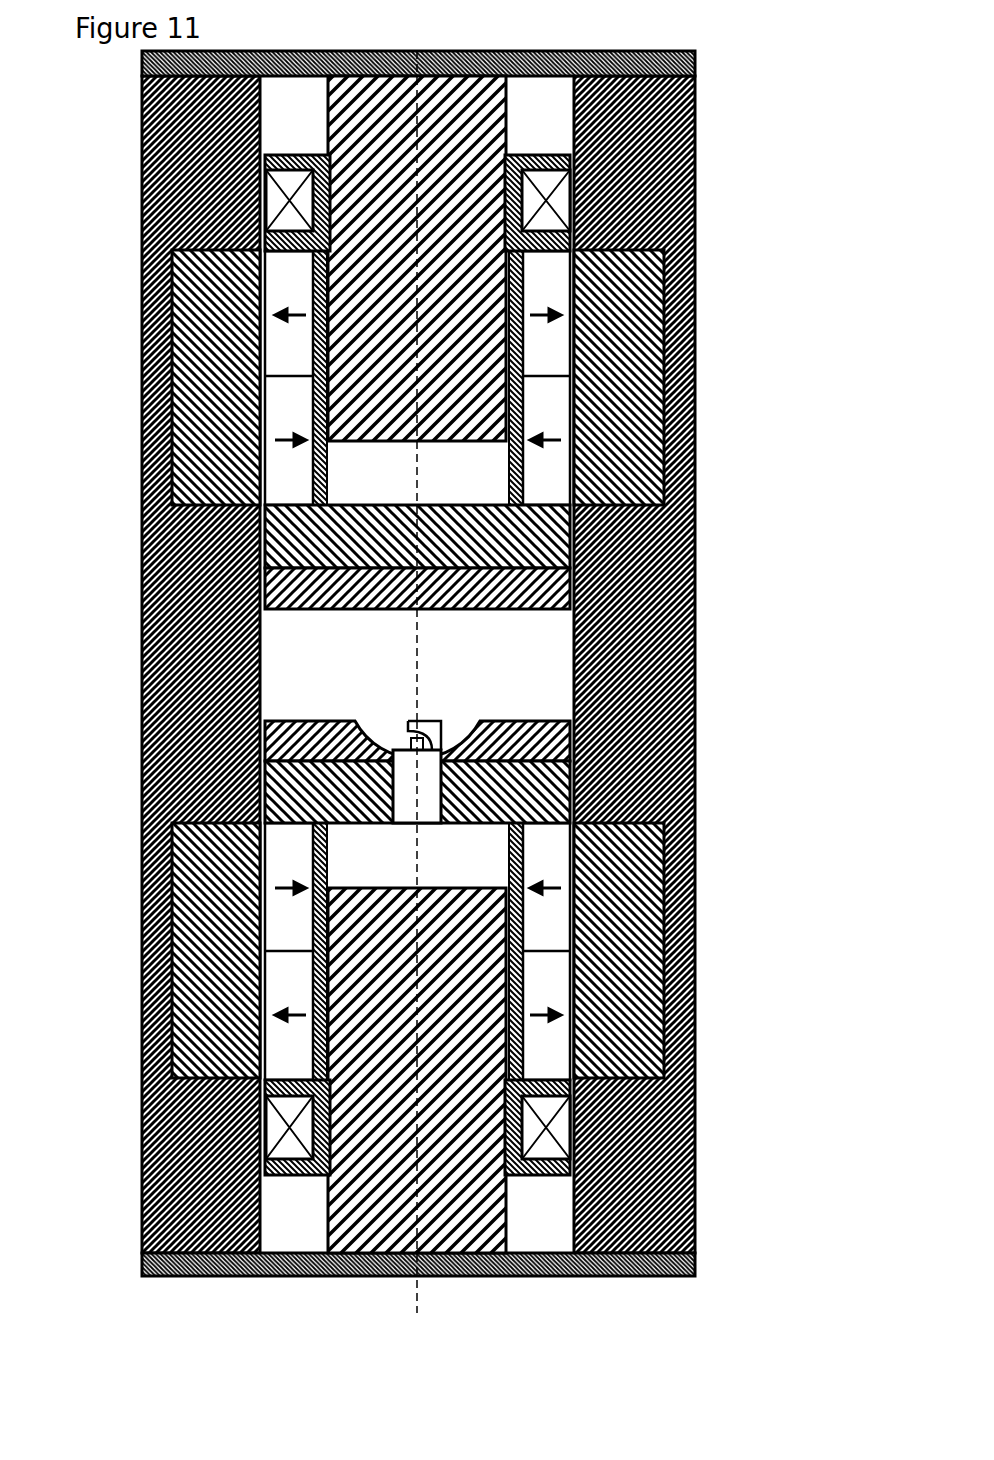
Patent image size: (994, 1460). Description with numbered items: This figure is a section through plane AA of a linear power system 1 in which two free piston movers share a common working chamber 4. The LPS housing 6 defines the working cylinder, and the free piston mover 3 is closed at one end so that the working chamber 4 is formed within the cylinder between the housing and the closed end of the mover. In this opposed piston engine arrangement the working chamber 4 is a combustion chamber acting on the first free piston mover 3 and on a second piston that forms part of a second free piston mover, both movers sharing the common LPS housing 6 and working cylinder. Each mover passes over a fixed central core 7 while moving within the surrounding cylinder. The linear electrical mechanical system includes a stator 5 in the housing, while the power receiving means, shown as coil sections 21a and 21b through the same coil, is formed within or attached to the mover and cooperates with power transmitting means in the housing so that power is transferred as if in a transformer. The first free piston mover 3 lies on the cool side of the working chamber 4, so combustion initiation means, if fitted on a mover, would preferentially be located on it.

The linear power system 1 is at (722, 160).
The free piston mover 3 is at (273, 535).
The working chamber 4 is at (275, 670).
The stator 5 is at (628, 998).
The LPS housing 6 is at (623, 647).
The fixed central core 7 is at (267, 1268).
The power receiving means coil section 21a is at (282, 172).
The power receiving means coil section 21b is at (535, 173).